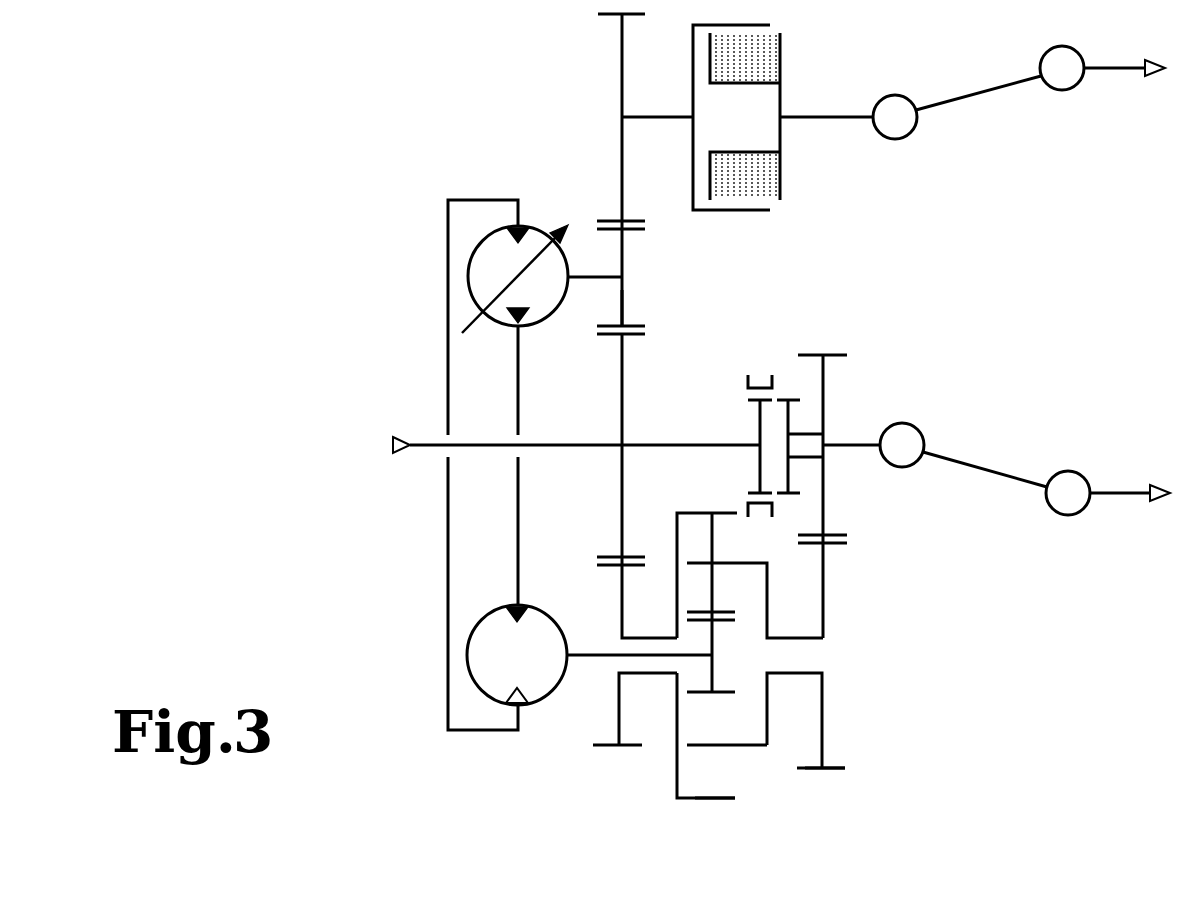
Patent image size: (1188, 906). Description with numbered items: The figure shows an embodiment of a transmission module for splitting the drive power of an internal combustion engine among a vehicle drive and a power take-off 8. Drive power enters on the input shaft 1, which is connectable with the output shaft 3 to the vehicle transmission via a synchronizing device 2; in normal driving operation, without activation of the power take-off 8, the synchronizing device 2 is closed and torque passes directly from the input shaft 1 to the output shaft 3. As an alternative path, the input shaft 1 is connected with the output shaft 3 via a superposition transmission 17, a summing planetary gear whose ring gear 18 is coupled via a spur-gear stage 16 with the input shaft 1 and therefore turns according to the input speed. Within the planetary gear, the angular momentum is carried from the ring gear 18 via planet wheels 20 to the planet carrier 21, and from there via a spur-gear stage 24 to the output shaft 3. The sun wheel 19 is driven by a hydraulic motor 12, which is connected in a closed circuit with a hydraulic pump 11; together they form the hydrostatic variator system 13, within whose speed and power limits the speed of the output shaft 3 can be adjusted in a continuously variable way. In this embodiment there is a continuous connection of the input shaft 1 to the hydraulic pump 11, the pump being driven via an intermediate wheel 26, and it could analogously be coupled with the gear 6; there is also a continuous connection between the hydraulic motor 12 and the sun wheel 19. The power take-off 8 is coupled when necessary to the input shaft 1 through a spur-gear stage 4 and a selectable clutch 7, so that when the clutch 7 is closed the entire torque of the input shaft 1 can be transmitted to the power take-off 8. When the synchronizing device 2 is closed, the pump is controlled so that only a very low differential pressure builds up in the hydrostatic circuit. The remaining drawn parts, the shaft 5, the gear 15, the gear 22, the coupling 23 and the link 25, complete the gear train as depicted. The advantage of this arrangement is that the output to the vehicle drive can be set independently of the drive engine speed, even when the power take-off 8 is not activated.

The input shaft 1 is at (440, 440).
The synchronizing device 2 is at (738, 386).
The output shaft 3 is at (850, 440).
The spur-gear stage 4 is at (655, 328).
The intermediate shaft (lower part) 5 is at (618, 385).
The gear 6 is at (620, 137).
The clutch 7 is at (717, 203).
The power take-off 8 is at (1107, 102).
The hydraulic pump 11 is at (470, 255).
The hydraulic motor 12 is at (467, 660).
The hydrostatic variator system 13 is at (437, 362).
The gear 15 is at (607, 747).
The spur-gear stage 16 is at (581, 561).
The superposition transmission 17 is at (708, 812).
The ring gear 18 is at (675, 722).
The sun wheel 19 is at (705, 695).
The planet wheels 20 is at (710, 537).
The planet carrier 21 is at (776, 598).
The gear 22 is at (825, 693).
The coupling 23 is at (825, 517).
The spur-gear stage 24 is at (828, 789).
The drive link 25 is at (977, 453).
The intermediate wheel 26 is at (625, 305).